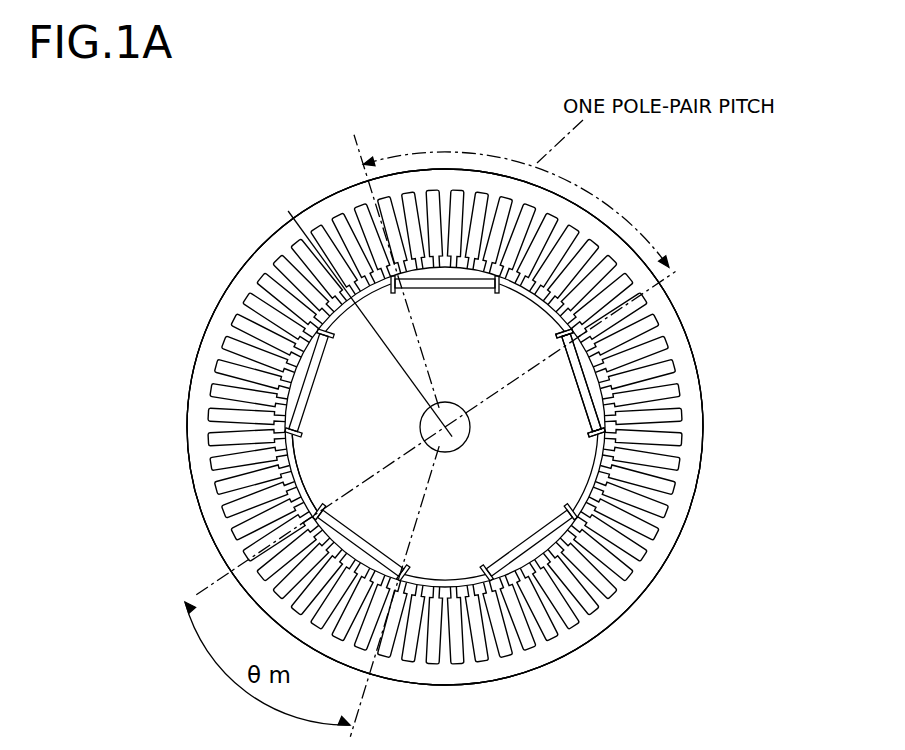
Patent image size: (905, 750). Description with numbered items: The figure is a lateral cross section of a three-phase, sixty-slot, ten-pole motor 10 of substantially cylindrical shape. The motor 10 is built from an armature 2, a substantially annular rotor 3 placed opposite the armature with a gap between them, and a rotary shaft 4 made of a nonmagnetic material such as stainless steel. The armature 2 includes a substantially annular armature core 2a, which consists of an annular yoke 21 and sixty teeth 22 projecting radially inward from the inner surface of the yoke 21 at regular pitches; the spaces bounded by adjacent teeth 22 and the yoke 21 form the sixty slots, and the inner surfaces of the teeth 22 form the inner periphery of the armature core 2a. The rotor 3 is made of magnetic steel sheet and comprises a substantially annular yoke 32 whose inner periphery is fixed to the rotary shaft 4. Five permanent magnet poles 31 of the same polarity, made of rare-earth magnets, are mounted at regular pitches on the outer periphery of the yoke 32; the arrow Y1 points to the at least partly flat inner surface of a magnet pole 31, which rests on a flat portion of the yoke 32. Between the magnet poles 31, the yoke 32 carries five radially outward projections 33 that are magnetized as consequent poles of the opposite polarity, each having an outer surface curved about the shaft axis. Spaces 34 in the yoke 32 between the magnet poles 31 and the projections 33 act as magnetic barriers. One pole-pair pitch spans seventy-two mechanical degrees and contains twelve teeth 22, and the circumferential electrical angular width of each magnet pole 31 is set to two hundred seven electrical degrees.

The motor 10 is at (455, 128).
The armature 2 is at (693, 351).
The armature core 2a is at (686, 525).
The yoke 21 is at (624, 254).
The teeth 22 is at (540, 218).
The rotor 3 is at (340, 417).
The permanent magnet poles 31 is at (308, 360).
The yoke 32 is at (337, 320).
The projections 33 is at (308, 457).
The spaces 34 is at (607, 443).
The rotary shaft 4 is at (290, 208).
The arrow Y1 is at (576, 376).